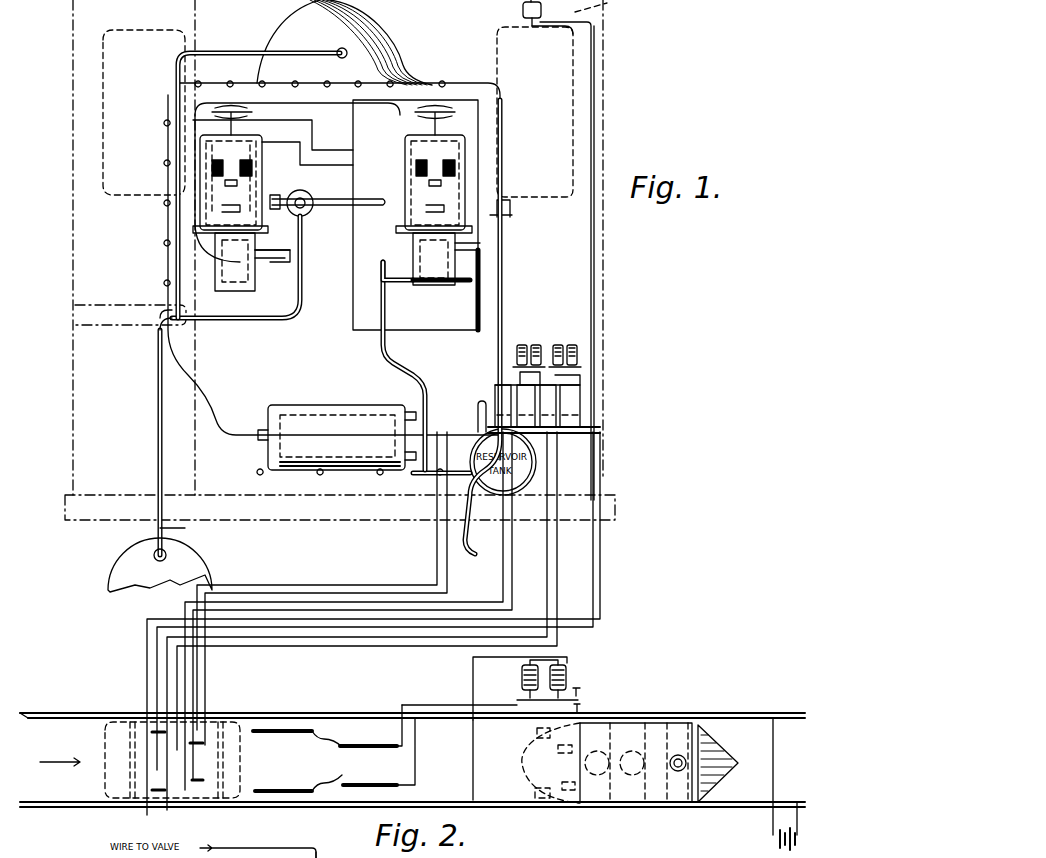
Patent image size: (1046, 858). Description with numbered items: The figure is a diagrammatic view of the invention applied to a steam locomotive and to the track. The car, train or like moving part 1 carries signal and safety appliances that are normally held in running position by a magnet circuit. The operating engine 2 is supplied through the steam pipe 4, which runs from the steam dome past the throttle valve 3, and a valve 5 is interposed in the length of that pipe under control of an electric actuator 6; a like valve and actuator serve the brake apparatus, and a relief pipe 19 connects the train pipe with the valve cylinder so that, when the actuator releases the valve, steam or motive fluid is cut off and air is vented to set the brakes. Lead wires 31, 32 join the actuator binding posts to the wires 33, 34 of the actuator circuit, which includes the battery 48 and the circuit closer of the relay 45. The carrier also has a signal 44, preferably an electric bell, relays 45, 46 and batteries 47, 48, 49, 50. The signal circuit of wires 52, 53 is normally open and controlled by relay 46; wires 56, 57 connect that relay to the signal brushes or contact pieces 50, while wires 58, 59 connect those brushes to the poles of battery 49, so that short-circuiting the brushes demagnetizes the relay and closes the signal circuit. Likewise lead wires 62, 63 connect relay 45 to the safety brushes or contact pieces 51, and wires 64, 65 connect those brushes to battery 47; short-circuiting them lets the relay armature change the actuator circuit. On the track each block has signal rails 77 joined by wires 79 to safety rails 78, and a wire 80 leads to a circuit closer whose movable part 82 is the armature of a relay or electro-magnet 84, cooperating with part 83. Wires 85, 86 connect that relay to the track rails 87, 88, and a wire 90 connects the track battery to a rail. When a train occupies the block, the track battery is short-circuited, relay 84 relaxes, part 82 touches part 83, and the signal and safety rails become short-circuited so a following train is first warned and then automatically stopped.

In FIG. 2, the car, train, carrier or like moving part 1 is at (630, 810).
In FIG. 1, the operating engine 2 is at (192, 564).
In FIG. 1, the throttle valve 3 is at (306, 215).
In FIG. 1, the steam pipe 4 is at (236, 53).
In FIG. 1, the valve 5 is at (257, 292).
In FIG. 1, the electric actuator 6 is at (262, 165).
In FIG. 1, the relief pipe 19 is at (288, 258).
In FIG. 1, the lead wire 31 is at (290, 118).
In FIG. 1, the lead wire 32 is at (325, 165).
In FIG. 1, the wire 33 is at (378, 360).
In FIG. 1, the wire 34 is at (362, 290).
In FIG. 2, the wire 34 is at (314, 850).
In FIG. 1, the signal 44 is at (522, 11).
In FIG. 1, the relay 45 is at (512, 354).
In FIG. 1, the relay 46 is at (580, 350).
In FIG. 1, the battery 47 is at (575, 432).
In FIG. 1, the battery 48 is at (545, 375).
In FIG. 1, the battery 49 is at (565, 416).
In FIG. 1, the battery / signal brushes or contact pieces 50 is at (575, 396).
In FIG. 2, the battery / signal brushes or contact pieces 50 is at (157, 788).
In FIG. 2, the safety brushes or contact pieces 51 is at (205, 764).
In FIG. 1, the wire 52 is at (586, 260).
In FIG. 1, the wire 53 is at (598, 260).
In FIG. 1, the wire 56 is at (603, 541).
In FIG. 2, the wire 56 is at (146, 632).
In FIG. 1, the wire 57 is at (595, 566).
In FIG. 2, the wire 57 is at (146, 655).
In FIG. 1, the wire 58 is at (357, 621).
In FIG. 2, the wire 58 is at (167, 678).
In FIG. 1, the wire 59 is at (367, 591).
In FIG. 2, the wire 59 is at (178, 669).
In FIG. 1, the lead wire 62 is at (437, 558).
In FIG. 1, the lead wire 63 is at (448, 573).
In FIG. 1, the wire 64 is at (502, 590).
In FIG. 1, the wire 65 is at (513, 592).
In FIG. 2, the signal rails 77 is at (284, 761).
In FIG. 2, the safety rails 78 is at (361, 761).
In FIG. 2, the wires 79 is at (371, 745).
In FIG. 2, the wire 80 is at (437, 704).
In FIG. 2, the circuit closer part / armature 82 is at (582, 694).
In FIG. 2, the circuit closer part 83 is at (582, 706).
In FIG. 2, the relay or electro-magnet 84 is at (568, 672).
In FIG. 2, the wire 85 is at (472, 663).
In FIG. 2, the wire 86 is at (490, 760).
In FIG. 2, the track rail 87 is at (742, 713).
In FIG. 2, the track rail 88 is at (720, 809).
In FIG. 2, the wire 90 is at (772, 785).